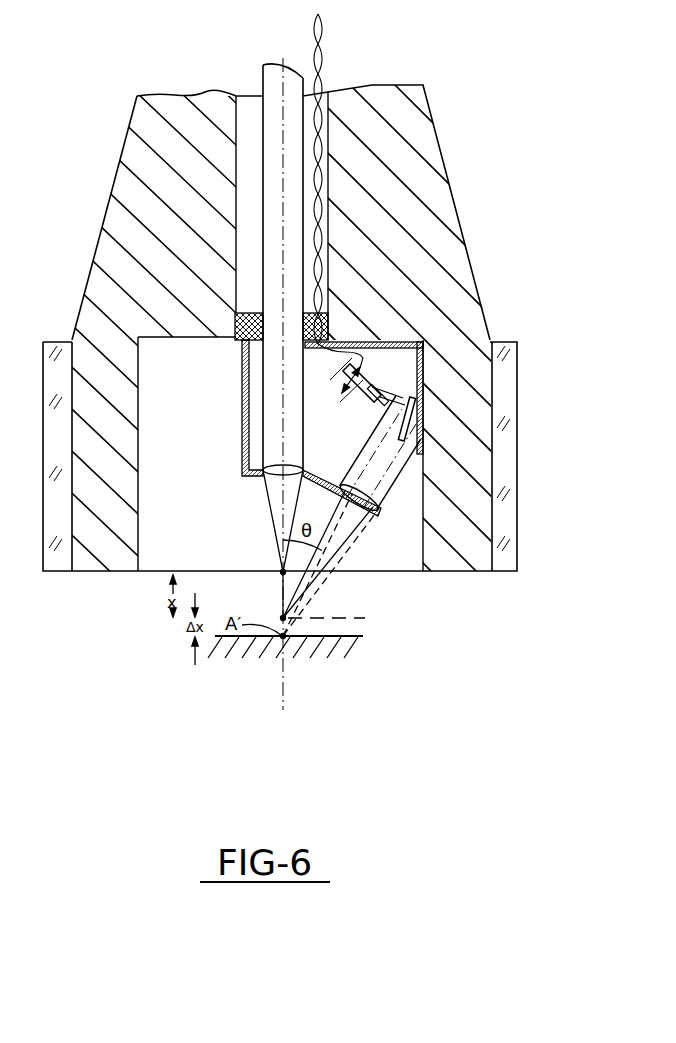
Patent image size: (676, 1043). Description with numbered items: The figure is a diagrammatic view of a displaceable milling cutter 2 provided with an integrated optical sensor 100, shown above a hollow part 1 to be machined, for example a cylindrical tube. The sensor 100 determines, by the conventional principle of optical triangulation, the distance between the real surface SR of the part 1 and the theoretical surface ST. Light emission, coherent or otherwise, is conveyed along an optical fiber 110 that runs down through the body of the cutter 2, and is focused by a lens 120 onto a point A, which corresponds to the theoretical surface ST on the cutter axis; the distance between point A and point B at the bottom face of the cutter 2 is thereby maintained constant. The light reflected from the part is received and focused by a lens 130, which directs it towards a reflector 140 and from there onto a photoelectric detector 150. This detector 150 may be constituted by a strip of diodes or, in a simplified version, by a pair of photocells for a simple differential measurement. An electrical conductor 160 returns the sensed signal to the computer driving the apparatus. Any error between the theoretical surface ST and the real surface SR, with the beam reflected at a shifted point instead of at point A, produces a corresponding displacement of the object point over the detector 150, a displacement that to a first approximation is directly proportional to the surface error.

The hollow part to be machined 1 is at (243, 648).
The displaceable milling cutter 2 is at (452, 237).
The integrated optical sensor 100 is at (211, 484).
The optical fiber 110 is at (246, 369).
The lens 120 is at (267, 480).
The lens 130 is at (368, 512).
The reflector 140 is at (408, 397).
The photoelectric detector 150 is at (372, 408).
The electrical conductor 160 is at (318, 74).
The focal point on theoretical surface A is at (282, 617).
The point at bottom face of cutter B is at (282, 571).
The theoretical surface ST is at (342, 616).
The real surface SR is at (357, 634).